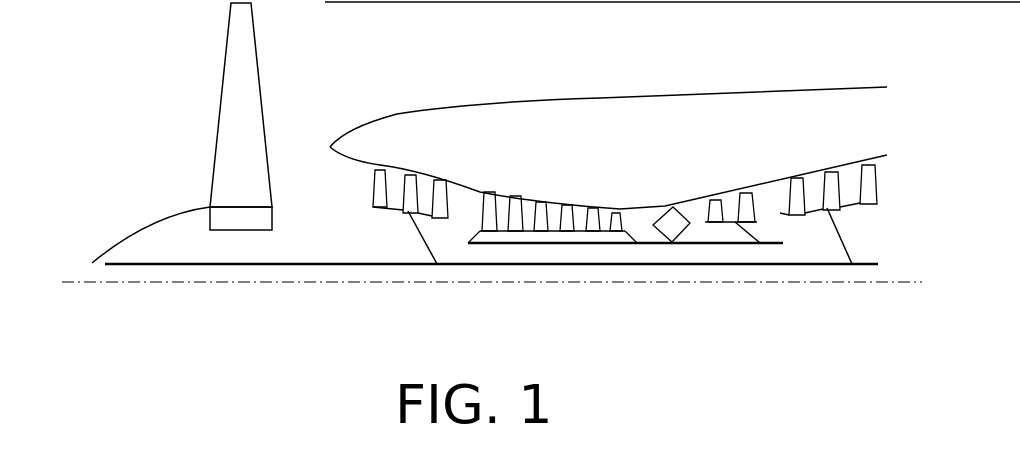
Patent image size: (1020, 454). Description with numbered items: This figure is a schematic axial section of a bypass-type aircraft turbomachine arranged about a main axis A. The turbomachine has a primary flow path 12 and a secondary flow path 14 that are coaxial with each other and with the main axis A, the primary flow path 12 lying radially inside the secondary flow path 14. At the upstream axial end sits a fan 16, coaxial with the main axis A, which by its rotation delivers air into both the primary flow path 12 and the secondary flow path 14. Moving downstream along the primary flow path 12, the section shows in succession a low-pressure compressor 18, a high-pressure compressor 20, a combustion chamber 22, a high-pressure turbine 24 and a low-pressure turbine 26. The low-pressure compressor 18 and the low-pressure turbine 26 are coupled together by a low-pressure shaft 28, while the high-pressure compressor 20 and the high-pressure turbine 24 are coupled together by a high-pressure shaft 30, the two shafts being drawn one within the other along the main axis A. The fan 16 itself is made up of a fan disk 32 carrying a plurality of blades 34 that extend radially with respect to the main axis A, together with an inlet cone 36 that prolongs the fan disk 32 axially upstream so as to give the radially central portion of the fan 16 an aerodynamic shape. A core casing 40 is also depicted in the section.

The primary flow path 12 is at (348, 183).
The secondary flow path 14 is at (368, 52).
The fan 16 is at (118, 60).
The low-pressure compressor 18 is at (393, 215).
The high-pressure compressor 20 is at (555, 233).
The combustion chamber 22 is at (680, 247).
The high-pressure turbine 24 is at (742, 237).
The low-pressure turbine 26 is at (838, 253).
The low-pressure shaft 28 is at (508, 266).
The high-pressure shaft 30 is at (637, 241).
The fan disk 32 is at (220, 215).
The blades 34 is at (213, 98).
The inlet cone 36 is at (120, 243).
The core casing 40 is at (470, 243).
The main axis A is at (70, 285).